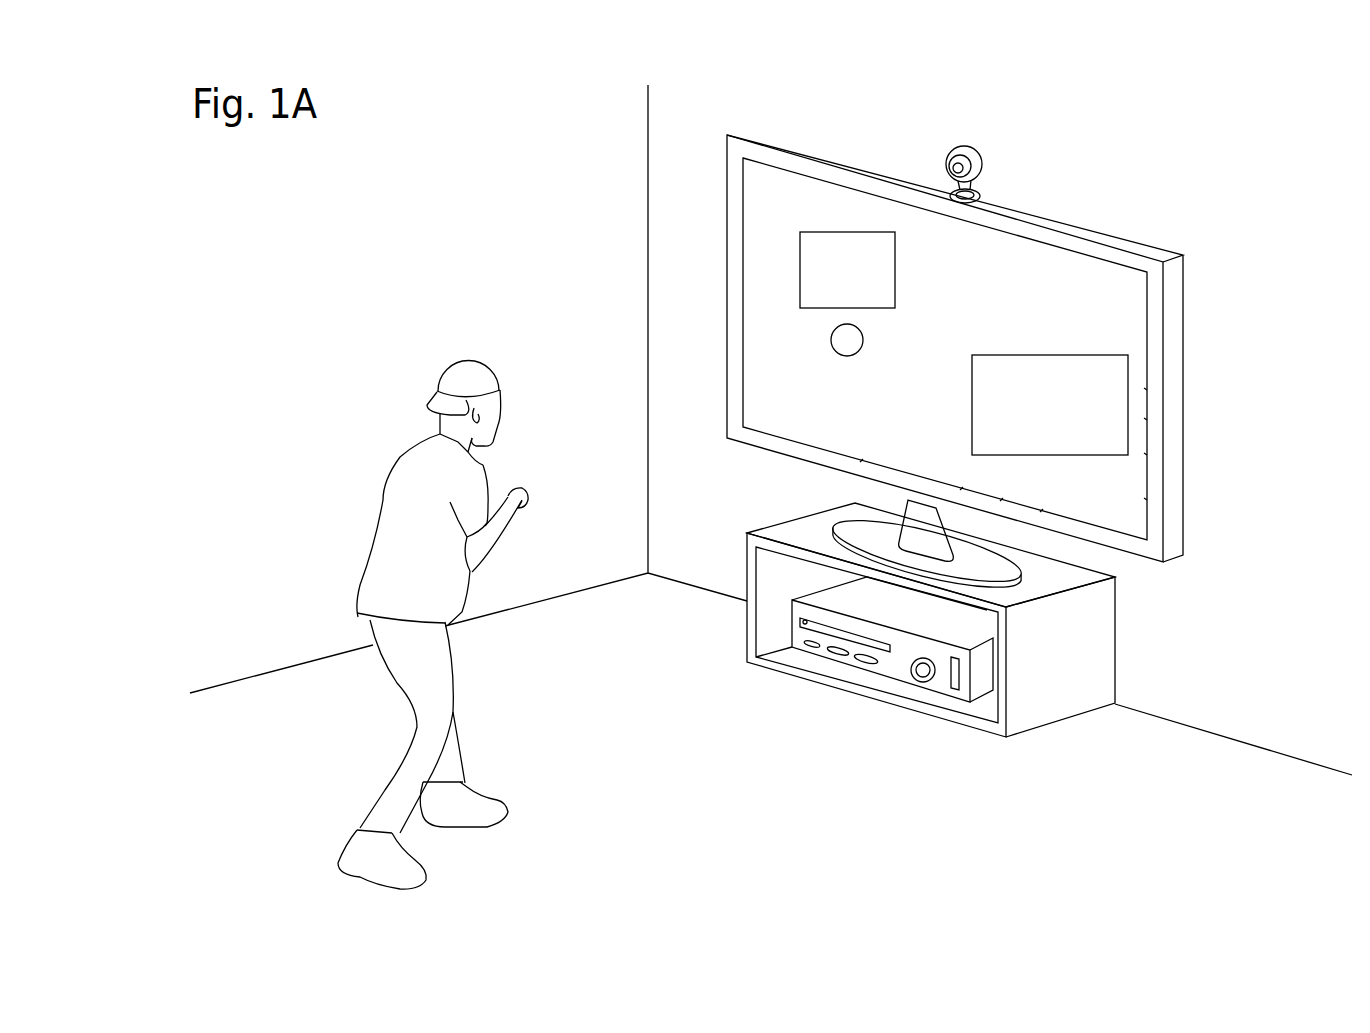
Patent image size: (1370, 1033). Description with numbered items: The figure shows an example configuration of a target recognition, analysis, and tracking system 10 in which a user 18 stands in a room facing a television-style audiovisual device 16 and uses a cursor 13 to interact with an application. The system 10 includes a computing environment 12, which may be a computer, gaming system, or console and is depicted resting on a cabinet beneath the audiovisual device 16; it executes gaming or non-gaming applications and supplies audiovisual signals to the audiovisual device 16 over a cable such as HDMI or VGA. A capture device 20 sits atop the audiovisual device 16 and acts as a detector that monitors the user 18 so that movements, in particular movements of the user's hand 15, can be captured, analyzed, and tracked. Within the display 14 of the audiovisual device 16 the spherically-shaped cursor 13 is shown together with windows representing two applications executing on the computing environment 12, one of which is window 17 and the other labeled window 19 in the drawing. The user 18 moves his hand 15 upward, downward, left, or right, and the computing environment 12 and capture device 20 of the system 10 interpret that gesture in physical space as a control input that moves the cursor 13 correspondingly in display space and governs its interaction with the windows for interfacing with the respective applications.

The target recognition, analysis, and tracking system 10 is at (1052, 116).
The computing environment 12 is at (898, 678).
The cursor 13 is at (832, 343).
The display 14 is at (1148, 475).
The hand 15 is at (528, 498).
The audiovisual device 16 is at (1188, 348).
The window 17 is at (895, 270).
The user 18 is at (455, 733).
The display window 19 is at (1048, 355).
The capture device 20 is at (983, 162).